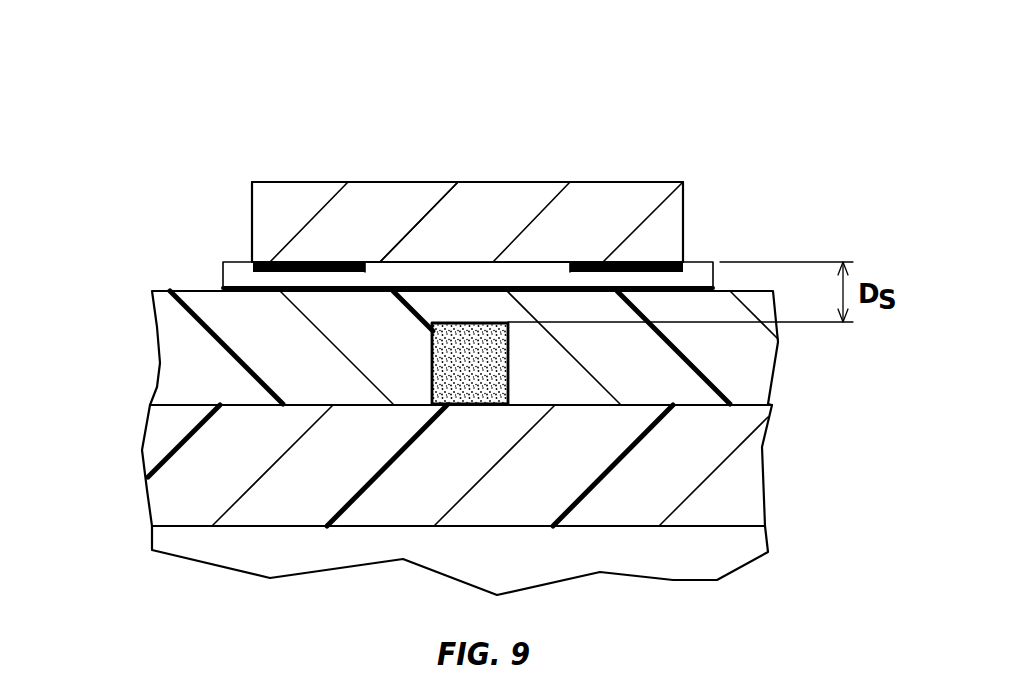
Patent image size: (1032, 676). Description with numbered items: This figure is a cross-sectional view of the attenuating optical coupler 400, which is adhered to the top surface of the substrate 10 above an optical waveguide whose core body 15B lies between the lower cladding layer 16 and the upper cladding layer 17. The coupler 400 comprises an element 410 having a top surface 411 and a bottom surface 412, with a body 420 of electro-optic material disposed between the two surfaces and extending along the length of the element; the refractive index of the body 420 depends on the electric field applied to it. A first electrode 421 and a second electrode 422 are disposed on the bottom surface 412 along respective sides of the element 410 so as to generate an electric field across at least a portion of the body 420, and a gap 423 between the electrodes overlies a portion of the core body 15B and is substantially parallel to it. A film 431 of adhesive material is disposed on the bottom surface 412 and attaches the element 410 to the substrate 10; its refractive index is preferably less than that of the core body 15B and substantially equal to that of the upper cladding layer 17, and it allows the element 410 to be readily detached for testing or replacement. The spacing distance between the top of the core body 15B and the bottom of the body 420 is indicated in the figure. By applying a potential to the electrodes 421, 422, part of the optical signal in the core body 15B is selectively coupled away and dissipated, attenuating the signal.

The attenuating optical coupler 400 is at (239, 85).
The element 410 is at (252, 183).
The top surface 411 is at (633, 180).
The bottom surface 412 is at (545, 262).
The body of electro-optic material 420 is at (370, 210).
The first electrode 421 is at (253, 267).
The second electrode 422 is at (667, 268).
The gap 423 is at (523, 272).
The adhesive film 431 is at (235, 262).
The upper cladding layer 17 is at (177, 353).
The cladding layer 16 is at (167, 433).
The substrate 10 is at (168, 542).
The core body 15B is at (490, 365).